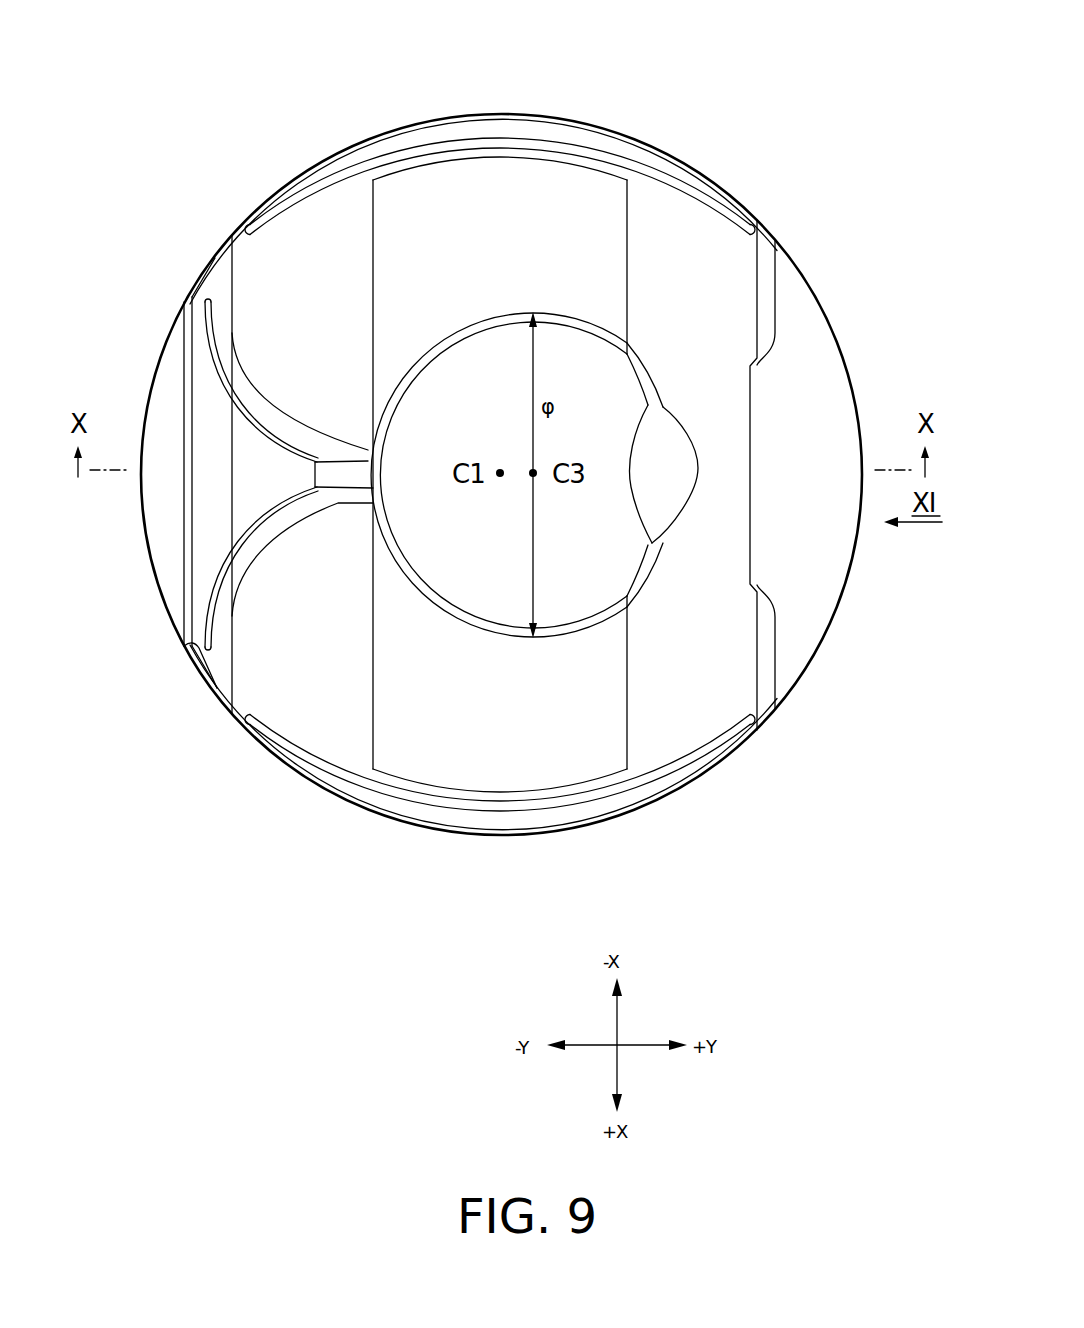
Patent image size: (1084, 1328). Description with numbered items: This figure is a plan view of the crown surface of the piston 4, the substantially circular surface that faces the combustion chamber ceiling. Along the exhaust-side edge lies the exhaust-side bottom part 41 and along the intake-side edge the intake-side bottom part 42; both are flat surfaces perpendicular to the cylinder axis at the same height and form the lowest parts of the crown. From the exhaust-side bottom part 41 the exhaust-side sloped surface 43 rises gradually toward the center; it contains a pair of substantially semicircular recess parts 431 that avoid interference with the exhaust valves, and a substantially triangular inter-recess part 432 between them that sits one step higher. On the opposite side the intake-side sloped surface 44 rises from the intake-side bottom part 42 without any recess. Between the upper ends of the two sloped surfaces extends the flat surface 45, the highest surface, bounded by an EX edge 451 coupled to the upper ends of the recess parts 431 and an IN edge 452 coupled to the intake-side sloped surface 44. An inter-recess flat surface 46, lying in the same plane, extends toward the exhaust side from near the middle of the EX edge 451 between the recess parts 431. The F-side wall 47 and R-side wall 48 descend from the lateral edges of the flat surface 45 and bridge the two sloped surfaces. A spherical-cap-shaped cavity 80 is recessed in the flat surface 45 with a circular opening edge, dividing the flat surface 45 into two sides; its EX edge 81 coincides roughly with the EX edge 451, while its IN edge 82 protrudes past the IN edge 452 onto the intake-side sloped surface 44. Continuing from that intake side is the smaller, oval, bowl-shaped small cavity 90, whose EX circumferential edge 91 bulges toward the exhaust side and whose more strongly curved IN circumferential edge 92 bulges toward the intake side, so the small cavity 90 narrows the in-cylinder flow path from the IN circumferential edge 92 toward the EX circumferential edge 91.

The piston 4 is at (816, 110).
The exhaust-side bottom part 41 is at (163, 518).
The intake-side bottom part 42 is at (825, 382).
The exhaust-side sloped surface 43 is at (108, 182).
The recess part 431 is at (292, 278).
The inter-recess part 432 is at (238, 453).
The intake-side sloped surface 44 is at (727, 300).
The flat surface 45 is at (540, 185).
The EX edge 451 is at (376, 690).
The IN edge 452 is at (627, 690).
The inter-recess flat surface 46 is at (345, 468).
The F-side wall 47 is at (455, 815).
The R-side wall 48 is at (473, 126).
The cavity 80 is at (473, 357).
The EX edge 81 is at (380, 453).
The IN edge 82 is at (643, 388).
The small cavity 90 is at (670, 442).
The EX circumferential edge 91 is at (634, 500).
The IN circumferential edge 92 is at (693, 497).